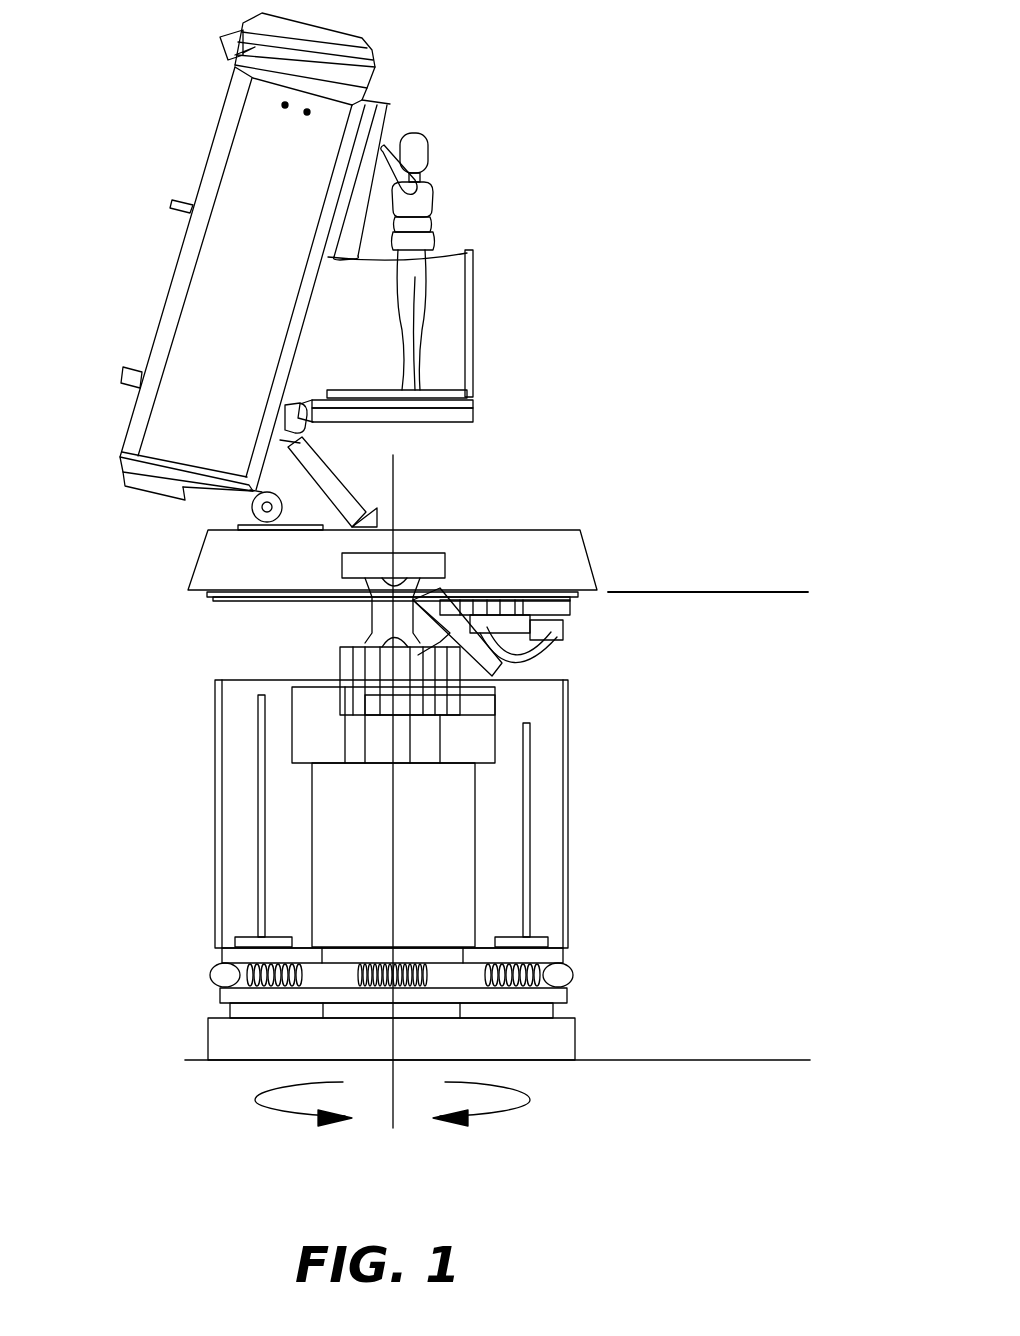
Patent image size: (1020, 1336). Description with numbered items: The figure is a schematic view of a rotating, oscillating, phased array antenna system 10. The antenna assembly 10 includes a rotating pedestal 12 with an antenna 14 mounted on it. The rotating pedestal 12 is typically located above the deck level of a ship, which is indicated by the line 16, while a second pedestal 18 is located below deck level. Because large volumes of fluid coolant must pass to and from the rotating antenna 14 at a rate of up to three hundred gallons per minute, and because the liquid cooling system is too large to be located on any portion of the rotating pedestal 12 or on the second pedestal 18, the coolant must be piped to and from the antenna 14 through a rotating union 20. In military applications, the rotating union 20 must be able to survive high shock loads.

The phased array antenna system 10 is at (86, 32).
The rotating pedestal 12 is at (563, 565).
The antenna 14 is at (242, 178).
The line 16 is at (727, 590).
The second pedestal 18 is at (213, 733).
The rotating union 20 is at (360, 613).